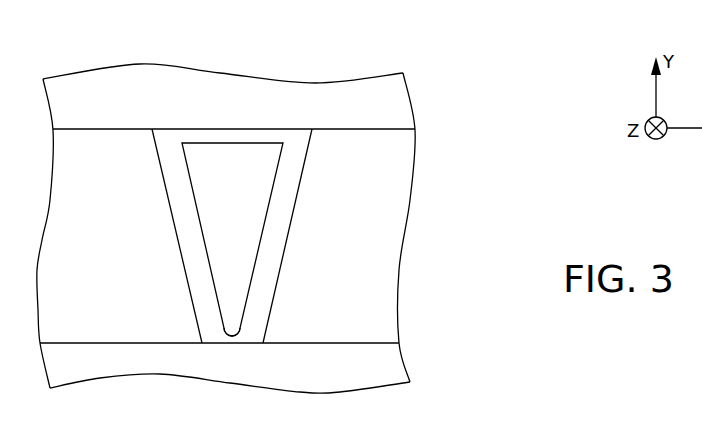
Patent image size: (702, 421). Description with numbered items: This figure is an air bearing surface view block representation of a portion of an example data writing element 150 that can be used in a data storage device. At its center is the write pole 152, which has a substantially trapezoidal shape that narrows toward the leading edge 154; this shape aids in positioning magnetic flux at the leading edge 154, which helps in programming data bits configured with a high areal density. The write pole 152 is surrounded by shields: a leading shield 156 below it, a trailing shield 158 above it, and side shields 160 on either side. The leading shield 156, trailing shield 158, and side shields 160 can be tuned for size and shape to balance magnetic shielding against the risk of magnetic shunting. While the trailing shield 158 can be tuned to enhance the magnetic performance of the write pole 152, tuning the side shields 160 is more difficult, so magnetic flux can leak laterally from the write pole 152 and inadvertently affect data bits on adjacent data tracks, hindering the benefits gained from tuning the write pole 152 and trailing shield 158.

The data writing element 150 is at (84, 42).
The write pole 152 is at (246, 208).
The leading edge 154 is at (231, 337).
The leading shield 156 is at (88, 368).
The trailing shield 158 is at (88, 112).
The side shields 160 is at (91, 156).